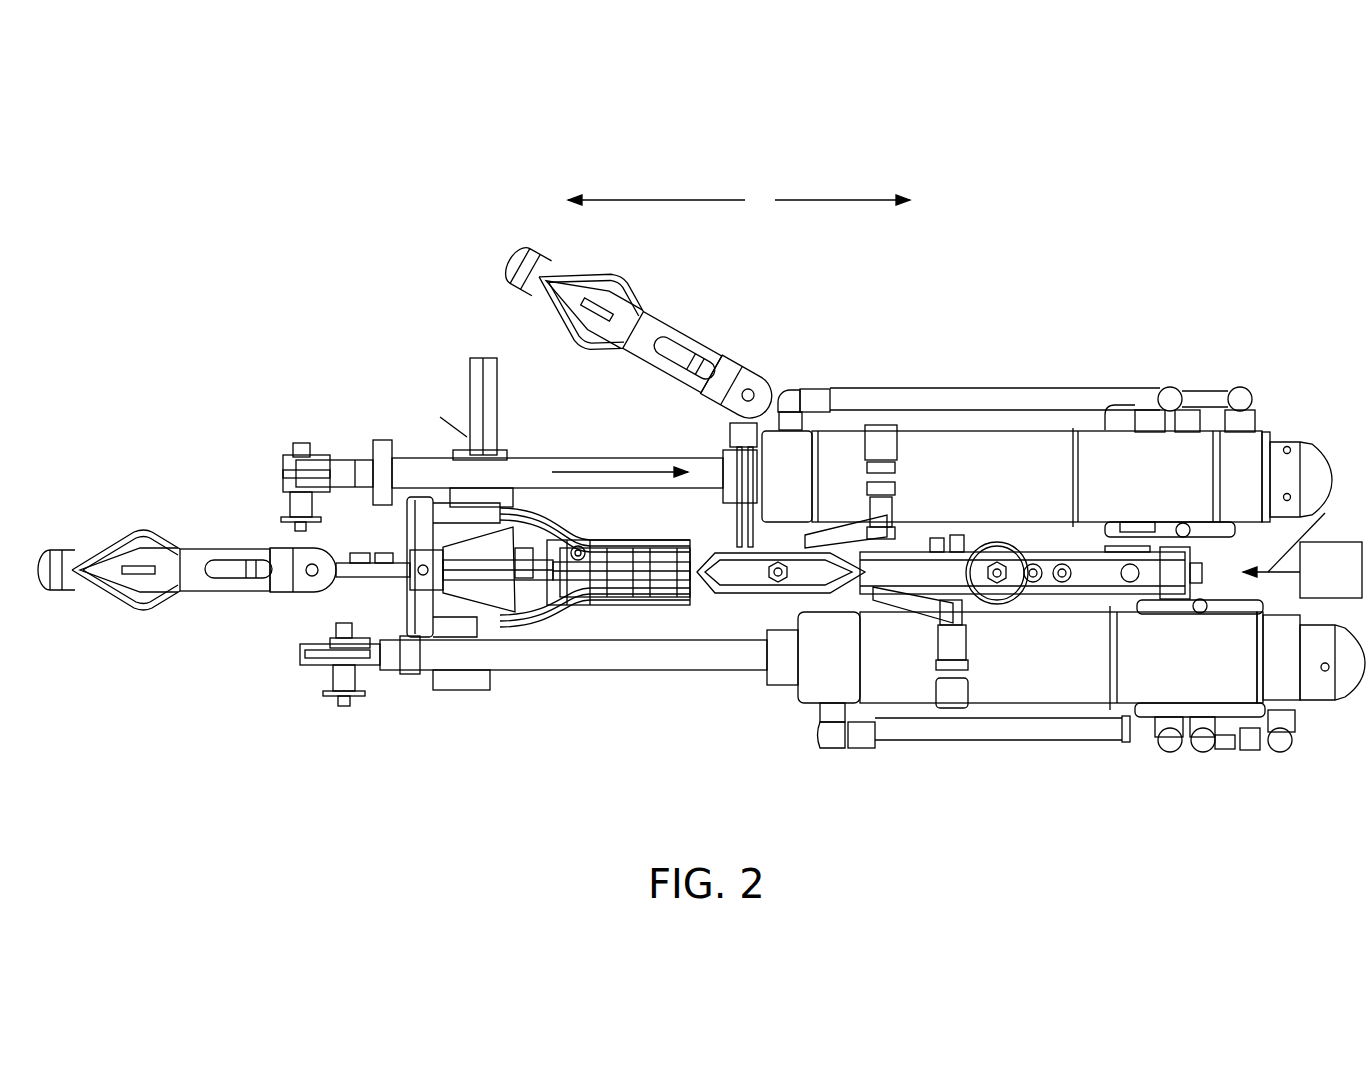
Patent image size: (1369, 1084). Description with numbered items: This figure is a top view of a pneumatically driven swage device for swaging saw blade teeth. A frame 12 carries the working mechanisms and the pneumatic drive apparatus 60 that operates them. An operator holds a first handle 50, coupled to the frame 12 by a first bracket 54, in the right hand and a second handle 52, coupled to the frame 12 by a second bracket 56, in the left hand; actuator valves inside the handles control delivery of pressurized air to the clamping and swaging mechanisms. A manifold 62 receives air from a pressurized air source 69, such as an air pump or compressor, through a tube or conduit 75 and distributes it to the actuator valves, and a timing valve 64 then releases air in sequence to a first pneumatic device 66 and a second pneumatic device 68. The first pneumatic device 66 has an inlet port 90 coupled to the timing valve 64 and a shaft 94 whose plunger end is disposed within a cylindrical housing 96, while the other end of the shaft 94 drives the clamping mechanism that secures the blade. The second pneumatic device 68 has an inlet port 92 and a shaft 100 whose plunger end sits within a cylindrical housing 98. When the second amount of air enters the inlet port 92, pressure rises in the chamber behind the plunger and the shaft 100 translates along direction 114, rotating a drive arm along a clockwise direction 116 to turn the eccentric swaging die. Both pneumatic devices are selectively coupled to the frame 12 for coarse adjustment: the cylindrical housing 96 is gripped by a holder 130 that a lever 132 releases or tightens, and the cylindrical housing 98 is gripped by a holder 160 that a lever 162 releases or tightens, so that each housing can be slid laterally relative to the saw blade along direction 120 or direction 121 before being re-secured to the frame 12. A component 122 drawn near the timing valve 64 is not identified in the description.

The frame 12 is at (403, 623).
The first handle 50 is at (108, 535).
The second handle 52 is at (507, 258).
The first bracket 54 is at (220, 592).
The second bracket 56 is at (677, 325).
The pneumatic drive apparatus 60 is at (1078, 240).
The manifold 62 is at (1038, 552).
The timing valve 64 is at (581, 560).
The first pneumatic device 66 is at (897, 707).
The second pneumatic device 68 is at (1005, 433).
The pressurized air source 69 is at (1302, 570).
The tube or conduit 75 is at (1312, 534).
The inlet port 90 is at (1197, 603).
The inlet port 92 is at (1190, 527).
The shaft 94 is at (522, 655).
The cylindrical housing 96 is at (1081, 658).
The cylindrical housing 98 is at (1047, 482).
The shaft 100 is at (405, 458).
The direction 114 is at (620, 468).
The clockwise direction 116 is at (490, 442).
The direction 120 is at (845, 198).
The direction 121 is at (653, 198).
The clamp 122 is at (757, 582).
The holder 130 is at (948, 698).
The lever 132 is at (953, 620).
The holder 160 is at (880, 425).
The lever 162 is at (872, 500).